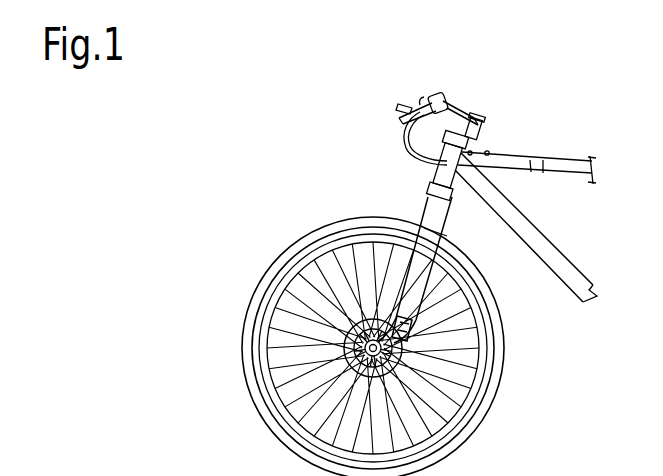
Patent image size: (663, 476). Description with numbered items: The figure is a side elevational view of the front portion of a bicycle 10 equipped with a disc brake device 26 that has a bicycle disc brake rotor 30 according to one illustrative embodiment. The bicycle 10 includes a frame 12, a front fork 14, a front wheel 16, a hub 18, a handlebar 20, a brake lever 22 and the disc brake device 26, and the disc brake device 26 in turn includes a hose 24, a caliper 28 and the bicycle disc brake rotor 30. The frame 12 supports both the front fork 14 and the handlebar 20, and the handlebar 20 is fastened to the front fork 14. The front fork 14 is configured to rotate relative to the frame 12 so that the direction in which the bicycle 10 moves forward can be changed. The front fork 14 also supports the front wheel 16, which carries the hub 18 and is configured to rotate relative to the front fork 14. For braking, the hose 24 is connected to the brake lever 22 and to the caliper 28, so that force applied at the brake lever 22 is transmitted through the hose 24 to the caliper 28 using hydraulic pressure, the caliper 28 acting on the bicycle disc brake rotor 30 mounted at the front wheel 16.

The bicycle 10 is at (339, 151).
The frame 12 is at (514, 212).
The front fork 14 is at (439, 218).
The front wheel 16 is at (506, 321).
The hub 18 is at (265, 342).
The handlebar 20 is at (445, 116).
The brake lever 22 is at (415, 107).
The hose 24 is at (409, 313).
The disc brake device 26 is at (421, 374).
The caliper 28 is at (401, 346).
The bicycle disc brake rotor 30 is at (337, 363).